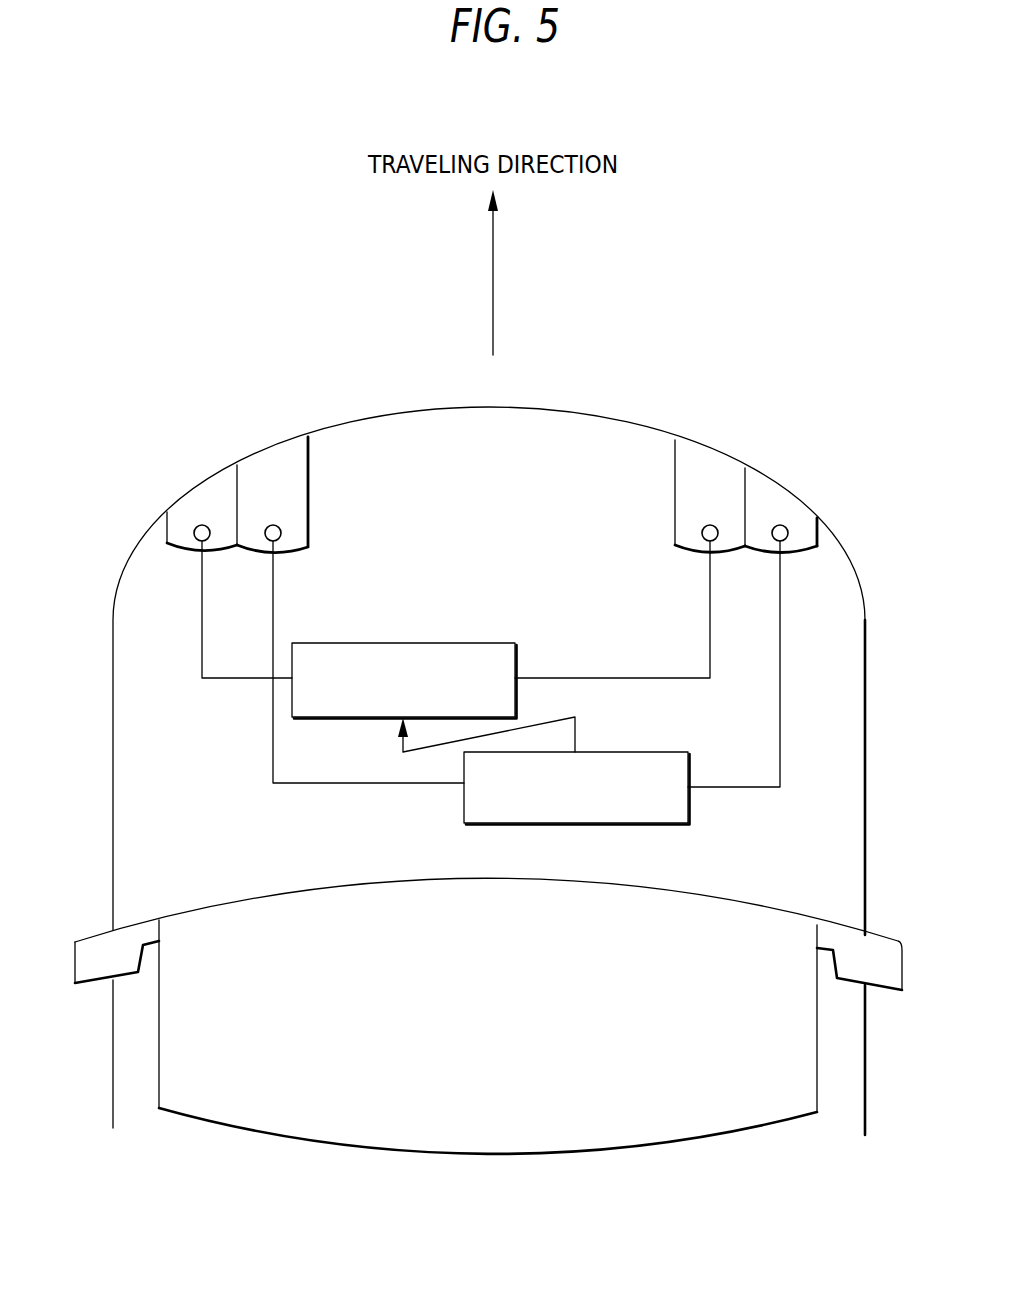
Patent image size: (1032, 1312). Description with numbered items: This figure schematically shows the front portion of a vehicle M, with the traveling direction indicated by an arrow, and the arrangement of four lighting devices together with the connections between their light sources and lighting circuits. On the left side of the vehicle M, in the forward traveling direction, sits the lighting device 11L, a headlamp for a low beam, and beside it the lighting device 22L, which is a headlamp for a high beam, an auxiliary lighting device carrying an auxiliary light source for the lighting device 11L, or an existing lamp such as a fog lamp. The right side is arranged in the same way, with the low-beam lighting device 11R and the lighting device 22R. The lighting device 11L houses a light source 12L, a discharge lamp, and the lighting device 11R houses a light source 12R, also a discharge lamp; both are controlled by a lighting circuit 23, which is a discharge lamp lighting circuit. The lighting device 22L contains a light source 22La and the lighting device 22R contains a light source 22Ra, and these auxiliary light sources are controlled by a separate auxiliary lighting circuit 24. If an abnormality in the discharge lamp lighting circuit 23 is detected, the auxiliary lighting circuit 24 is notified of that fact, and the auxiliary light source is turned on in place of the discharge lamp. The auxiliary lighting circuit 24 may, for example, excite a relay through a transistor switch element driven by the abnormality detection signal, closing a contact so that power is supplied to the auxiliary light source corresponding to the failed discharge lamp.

The vehicle M is at (847, 835).
The lighting device 11L is at (223, 482).
The lighting device 11R is at (758, 487).
The light source 12L is at (196, 528).
The light source 12R is at (782, 530).
The lighting device 22L is at (285, 455).
The lighting device 22R is at (698, 458).
The light source 22La is at (282, 532).
The light source 22Ra is at (702, 536).
The discharge lamp lighting circuit 23 is at (627, 752).
The auxiliary lighting circuit 24 is at (404, 643).